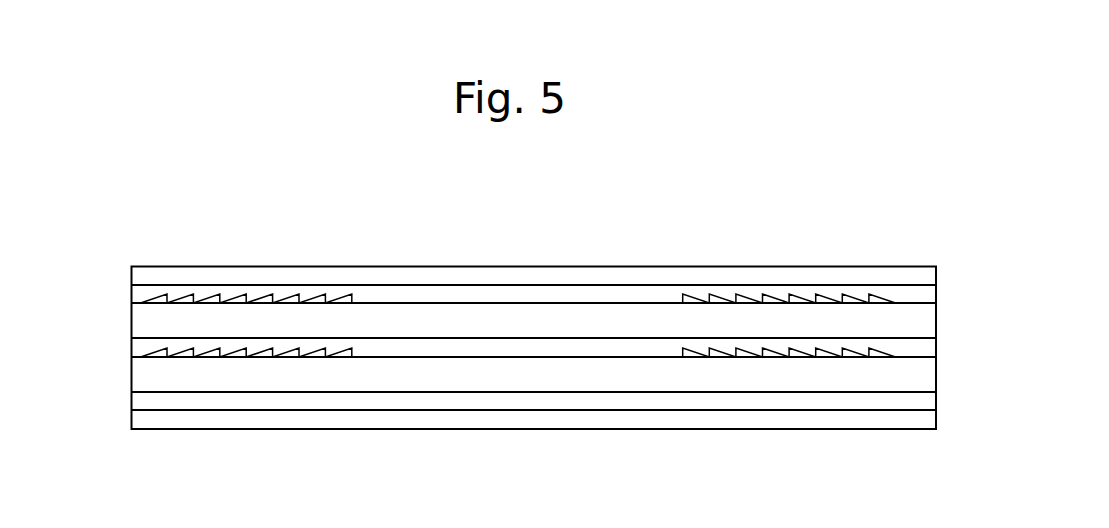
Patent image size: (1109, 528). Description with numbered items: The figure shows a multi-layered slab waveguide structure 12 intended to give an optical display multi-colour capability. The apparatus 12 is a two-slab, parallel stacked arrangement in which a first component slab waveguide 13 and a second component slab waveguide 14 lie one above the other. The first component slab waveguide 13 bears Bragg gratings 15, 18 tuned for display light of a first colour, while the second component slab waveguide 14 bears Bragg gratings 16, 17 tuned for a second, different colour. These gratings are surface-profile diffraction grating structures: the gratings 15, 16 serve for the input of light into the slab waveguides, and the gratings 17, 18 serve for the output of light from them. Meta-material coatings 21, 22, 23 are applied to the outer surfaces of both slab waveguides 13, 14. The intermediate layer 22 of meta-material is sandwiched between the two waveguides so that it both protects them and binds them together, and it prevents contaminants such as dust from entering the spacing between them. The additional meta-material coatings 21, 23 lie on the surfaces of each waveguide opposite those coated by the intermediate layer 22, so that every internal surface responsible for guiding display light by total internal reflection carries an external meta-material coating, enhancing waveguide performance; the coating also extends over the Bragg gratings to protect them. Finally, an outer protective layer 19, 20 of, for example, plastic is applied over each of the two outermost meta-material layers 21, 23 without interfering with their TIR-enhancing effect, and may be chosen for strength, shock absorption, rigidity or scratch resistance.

The multi-layered slab waveguide structure 12 is at (782, 233).
The first component slab waveguide 13 is at (147, 375).
The second component slab waveguide 14 is at (148, 322).
The Bragg grating 15 is at (242, 357).
The Bragg grating 16 is at (292, 298).
The Bragg grating 17 is at (853, 297).
The Bragg grating 18 is at (870, 350).
The outer protective layer 19 is at (579, 274).
The outer protective layer 20 is at (673, 423).
The meta-material coating 21 is at (455, 297).
The intermediate layer of meta-material 22 is at (463, 348).
The meta-material coating 23 is at (367, 402).